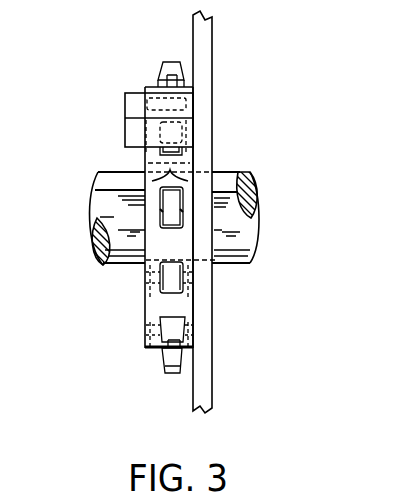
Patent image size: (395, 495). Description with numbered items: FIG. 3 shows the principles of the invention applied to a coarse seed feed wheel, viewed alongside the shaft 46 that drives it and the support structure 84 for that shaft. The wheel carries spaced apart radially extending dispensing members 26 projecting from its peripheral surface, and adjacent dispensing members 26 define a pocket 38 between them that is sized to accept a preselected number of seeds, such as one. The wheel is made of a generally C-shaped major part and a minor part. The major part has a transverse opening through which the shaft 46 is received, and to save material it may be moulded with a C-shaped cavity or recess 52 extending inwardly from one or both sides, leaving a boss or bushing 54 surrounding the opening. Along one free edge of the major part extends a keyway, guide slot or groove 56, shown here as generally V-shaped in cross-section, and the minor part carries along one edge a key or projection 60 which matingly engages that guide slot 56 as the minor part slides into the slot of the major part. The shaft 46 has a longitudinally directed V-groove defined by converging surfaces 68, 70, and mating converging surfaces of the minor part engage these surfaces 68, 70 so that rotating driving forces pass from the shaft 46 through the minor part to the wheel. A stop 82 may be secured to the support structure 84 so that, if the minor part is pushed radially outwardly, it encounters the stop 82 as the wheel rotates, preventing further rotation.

The dispensing members 26 is at (168, 363).
The pocket 38 is at (168, 303).
The shaft 46 is at (97, 255).
The C-shaped cavity or recess 52 is at (147, 105).
The boss or bushing 54 is at (143, 155).
The keyway, guide slot or groove 56 is at (208, 175).
The key or projection 60 is at (99, 177).
The converging surface 68 is at (153, 217).
The converging surface 70 is at (120, 230).
The stop 82 is at (125, 123).
The support structure 84 is at (205, 71).